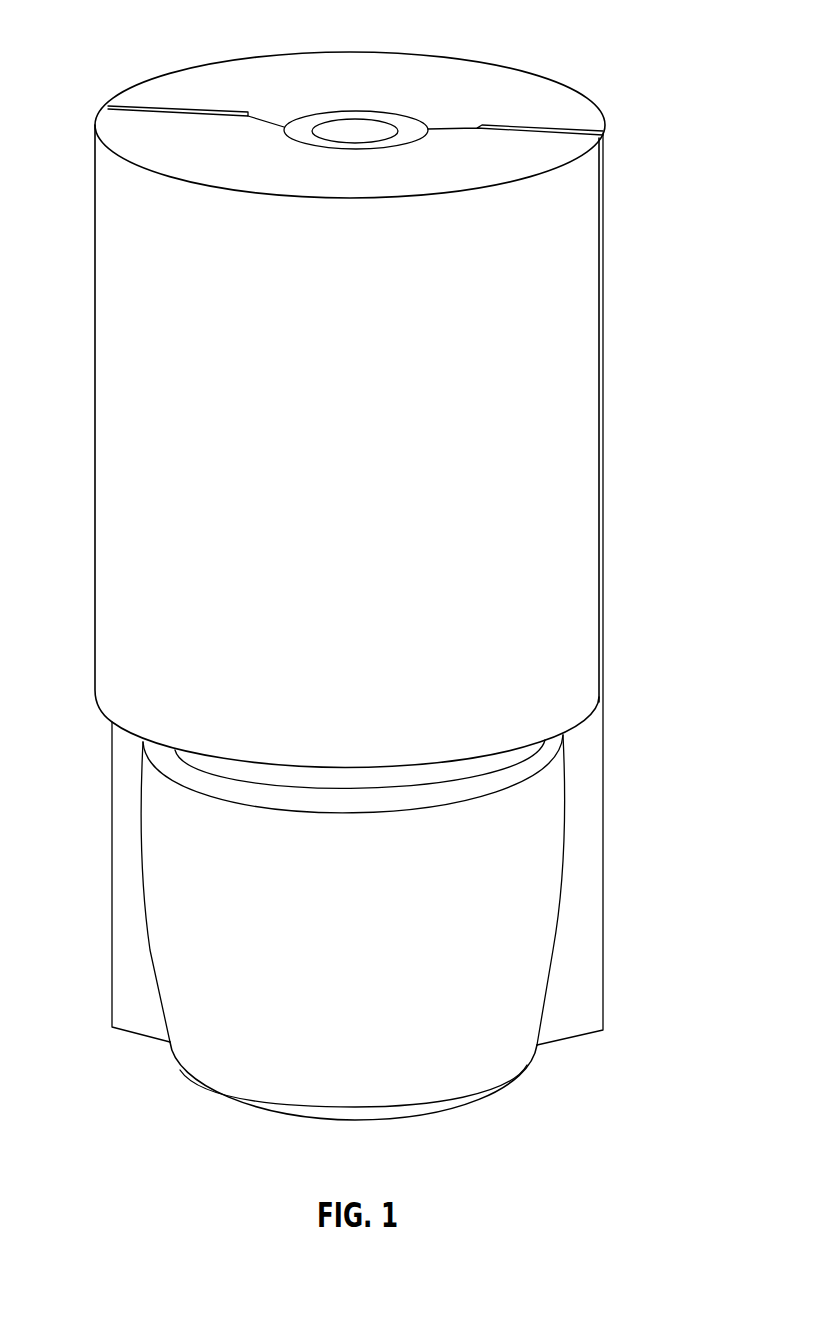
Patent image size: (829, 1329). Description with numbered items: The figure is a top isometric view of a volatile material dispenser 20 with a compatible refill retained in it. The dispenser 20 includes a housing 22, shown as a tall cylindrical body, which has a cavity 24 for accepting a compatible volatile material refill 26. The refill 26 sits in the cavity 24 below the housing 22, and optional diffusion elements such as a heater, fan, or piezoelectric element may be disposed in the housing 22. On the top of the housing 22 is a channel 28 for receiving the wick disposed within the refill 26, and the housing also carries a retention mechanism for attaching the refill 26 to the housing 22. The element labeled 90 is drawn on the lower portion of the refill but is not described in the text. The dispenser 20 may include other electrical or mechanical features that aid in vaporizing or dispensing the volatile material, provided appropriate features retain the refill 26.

The volatile material dispenser 20 is at (636, 97).
The housing 22 is at (570, 426).
The cavity 24 is at (129, 758).
The volatile material refill 26 is at (423, 1068).
The channel 28 is at (351, 138).
The cup 90 is at (535, 930).